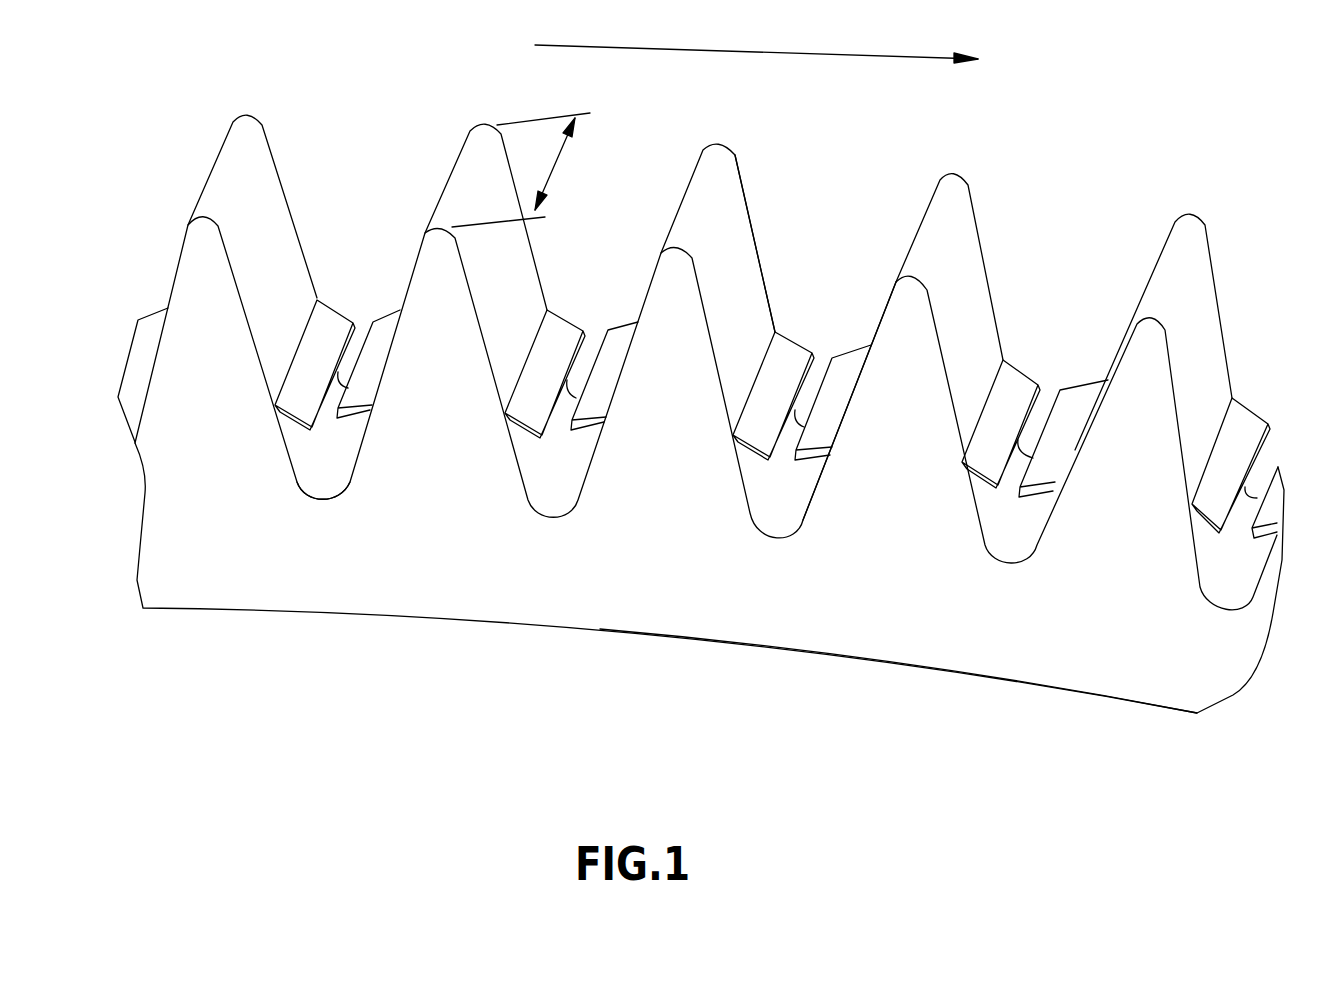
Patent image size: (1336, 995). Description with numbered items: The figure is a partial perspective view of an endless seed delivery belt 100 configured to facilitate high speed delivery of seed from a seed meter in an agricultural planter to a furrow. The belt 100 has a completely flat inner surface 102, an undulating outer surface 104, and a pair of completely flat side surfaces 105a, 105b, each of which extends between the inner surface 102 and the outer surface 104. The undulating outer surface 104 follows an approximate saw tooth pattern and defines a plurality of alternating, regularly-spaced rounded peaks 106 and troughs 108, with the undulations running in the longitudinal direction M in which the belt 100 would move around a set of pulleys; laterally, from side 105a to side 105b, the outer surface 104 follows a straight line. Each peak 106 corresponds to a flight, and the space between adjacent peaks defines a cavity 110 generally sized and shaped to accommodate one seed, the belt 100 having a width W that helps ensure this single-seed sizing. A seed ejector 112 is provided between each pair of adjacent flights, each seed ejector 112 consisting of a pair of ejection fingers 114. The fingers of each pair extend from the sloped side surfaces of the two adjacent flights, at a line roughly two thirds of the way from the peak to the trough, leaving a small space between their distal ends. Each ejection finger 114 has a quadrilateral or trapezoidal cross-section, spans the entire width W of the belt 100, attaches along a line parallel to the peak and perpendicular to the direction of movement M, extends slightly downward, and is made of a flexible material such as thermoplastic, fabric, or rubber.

The endless seed delivery belt 100 is at (1055, 103).
The flat inner surface 102 is at (895, 662).
The undulating outer surface 104 is at (707, 374).
The flat side surface 105a is at (1060, 662).
The flat side surface 105b is at (1203, 263).
The peak 106 is at (246, 116).
The trough 108 is at (315, 498).
The cavity 110 is at (833, 262).
The seed ejector 112 is at (637, 310).
The ejection fingers 114 is at (1075, 400).
The width W is at (557, 167).
The direction of movement M is at (800, 52).